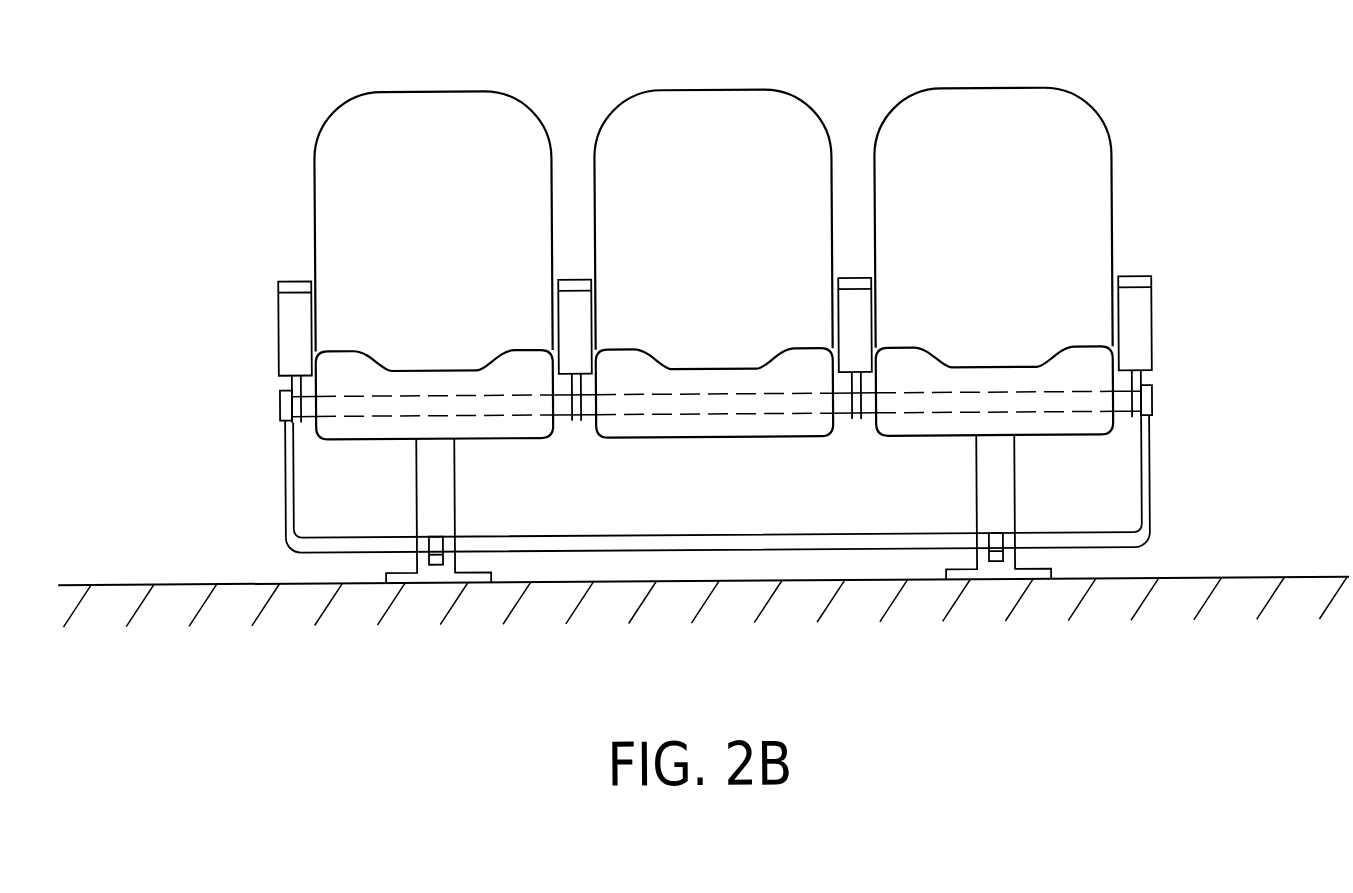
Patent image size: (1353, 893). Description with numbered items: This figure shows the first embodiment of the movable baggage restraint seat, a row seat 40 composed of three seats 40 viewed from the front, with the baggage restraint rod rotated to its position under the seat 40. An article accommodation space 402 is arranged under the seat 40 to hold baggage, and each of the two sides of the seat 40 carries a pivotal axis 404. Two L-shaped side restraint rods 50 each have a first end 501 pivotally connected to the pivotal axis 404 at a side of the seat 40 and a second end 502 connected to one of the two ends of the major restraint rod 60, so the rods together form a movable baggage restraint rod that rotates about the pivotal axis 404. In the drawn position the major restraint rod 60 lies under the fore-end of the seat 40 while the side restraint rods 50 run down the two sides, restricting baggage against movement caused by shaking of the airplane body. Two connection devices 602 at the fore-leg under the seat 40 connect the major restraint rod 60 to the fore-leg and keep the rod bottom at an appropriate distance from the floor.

The seat 40 is at (1100, 191).
The article accommodation space 402 is at (715, 487).
The pivotal axis 404 is at (278, 404).
The side restraint rod 50 is at (719, 483).
The first end 501 is at (290, 428).
The second end 502 is at (290, 525).
The major restraint rod 60 is at (815, 537).
The connection device 602 is at (437, 563).